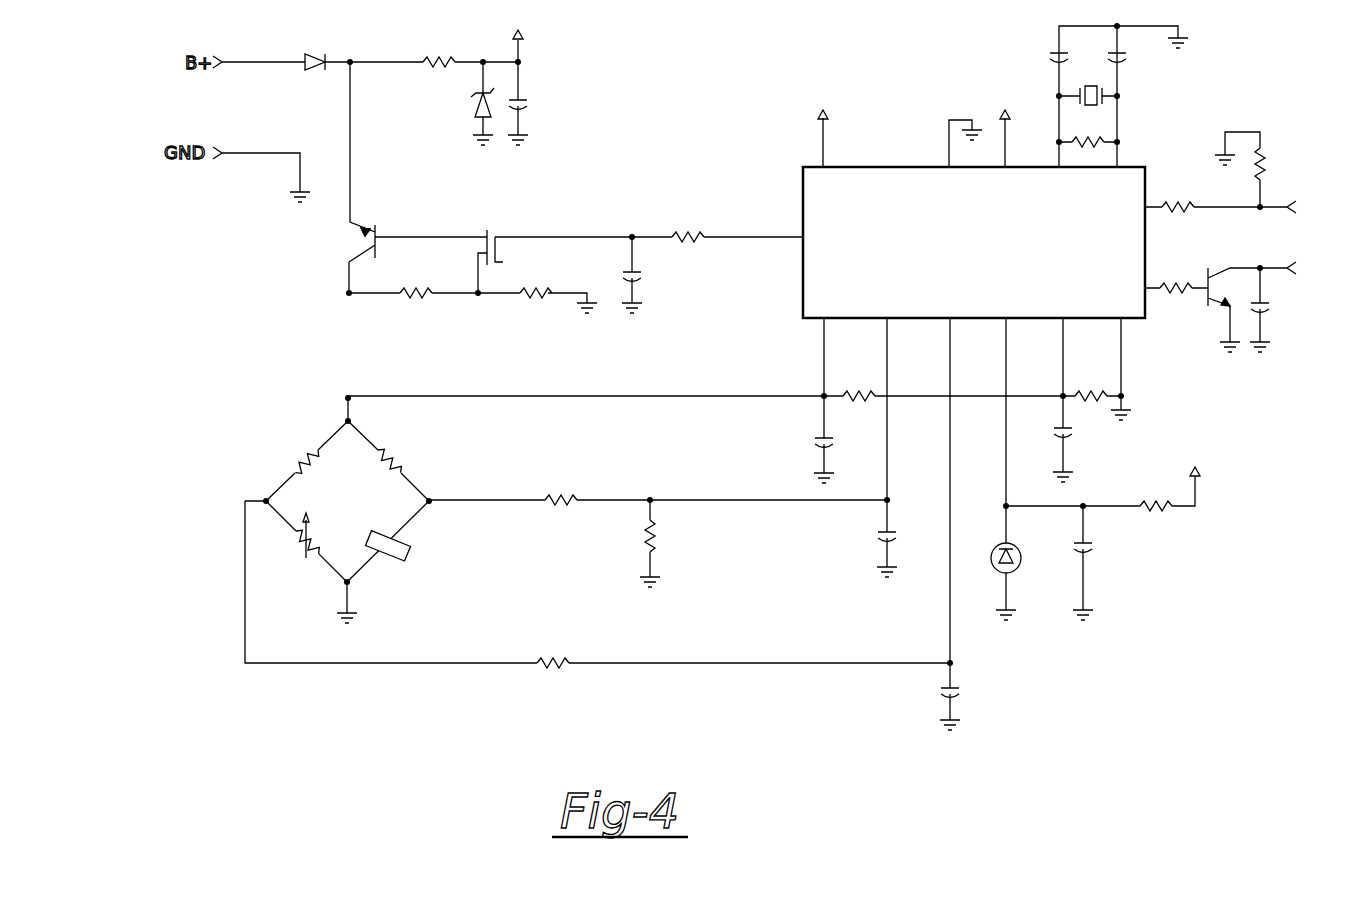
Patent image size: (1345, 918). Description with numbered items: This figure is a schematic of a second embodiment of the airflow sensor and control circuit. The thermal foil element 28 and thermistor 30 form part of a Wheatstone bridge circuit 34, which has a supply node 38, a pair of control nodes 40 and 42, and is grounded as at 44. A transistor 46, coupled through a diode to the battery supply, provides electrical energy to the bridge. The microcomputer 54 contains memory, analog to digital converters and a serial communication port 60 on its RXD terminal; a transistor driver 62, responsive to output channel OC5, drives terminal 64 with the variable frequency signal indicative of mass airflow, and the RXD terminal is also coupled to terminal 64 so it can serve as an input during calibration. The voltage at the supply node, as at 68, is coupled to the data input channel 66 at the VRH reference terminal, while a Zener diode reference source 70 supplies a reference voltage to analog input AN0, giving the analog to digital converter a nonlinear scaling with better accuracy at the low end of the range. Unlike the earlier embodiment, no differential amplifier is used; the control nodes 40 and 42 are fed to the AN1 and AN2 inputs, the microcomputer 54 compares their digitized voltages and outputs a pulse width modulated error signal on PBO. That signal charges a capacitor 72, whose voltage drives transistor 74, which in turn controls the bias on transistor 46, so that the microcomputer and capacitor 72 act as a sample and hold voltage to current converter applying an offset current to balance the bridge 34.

The thermal foil element 28 is at (404, 560).
The thermistor 30 is at (310, 533).
The bridge circuit 34 is at (356, 513).
The supply node 38 is at (352, 421).
The control node 40 is at (266, 506).
The control node 42 is at (431, 497).
The ground 44 is at (350, 585).
The transistor 46 is at (380, 229).
The microcomputer 54 is at (968, 251).
The serial communication port 60 is at (1150, 204).
The transistor driver 62 is at (1206, 276).
The terminal 64 is at (1245, 267).
The data input channel 66 is at (818, 326).
The coupling to supply node 68 is at (352, 397).
The Zener diode reference source 70 is at (990, 545).
The capacitor 72 is at (640, 270).
The transistor 74 is at (487, 233).